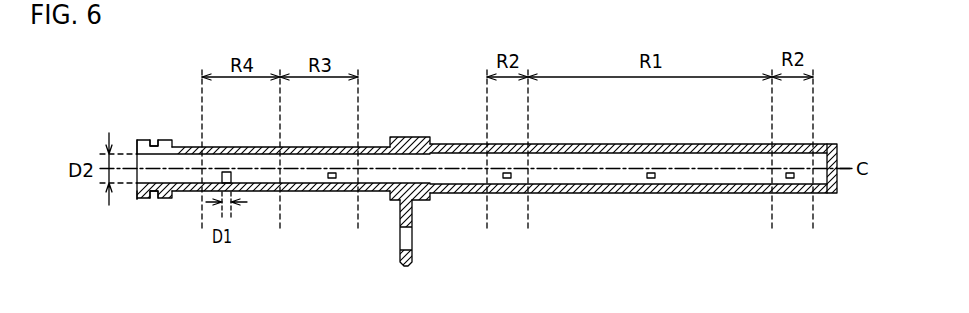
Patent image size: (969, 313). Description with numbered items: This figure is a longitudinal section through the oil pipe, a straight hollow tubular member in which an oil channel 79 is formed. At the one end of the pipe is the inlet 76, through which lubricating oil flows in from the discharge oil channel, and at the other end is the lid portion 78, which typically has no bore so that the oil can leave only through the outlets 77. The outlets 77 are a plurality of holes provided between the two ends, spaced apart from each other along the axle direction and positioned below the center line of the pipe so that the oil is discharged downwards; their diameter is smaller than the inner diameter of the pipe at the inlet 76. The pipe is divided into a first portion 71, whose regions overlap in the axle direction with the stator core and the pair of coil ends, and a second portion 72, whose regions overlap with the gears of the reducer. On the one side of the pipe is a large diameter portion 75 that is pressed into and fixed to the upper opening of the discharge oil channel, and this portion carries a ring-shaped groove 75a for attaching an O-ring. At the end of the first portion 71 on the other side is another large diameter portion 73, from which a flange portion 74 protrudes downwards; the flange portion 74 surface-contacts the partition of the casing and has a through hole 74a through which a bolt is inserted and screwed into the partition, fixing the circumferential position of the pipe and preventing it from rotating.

The first portion 71 is at (600, 193).
The second portion 72 is at (305, 191).
The large diameter portion 73 is at (408, 137).
The flange portion 74 is at (412, 213).
The through hole 74a is at (400, 240).
The large diameter portion 75 is at (150, 140).
The ring-shaped groove 75a is at (152, 199).
The inlet 76 is at (136, 178).
The outlets 77 is at (225, 172).
The lid portion 78 is at (837, 165).
The oil channel 79 is at (452, 162).